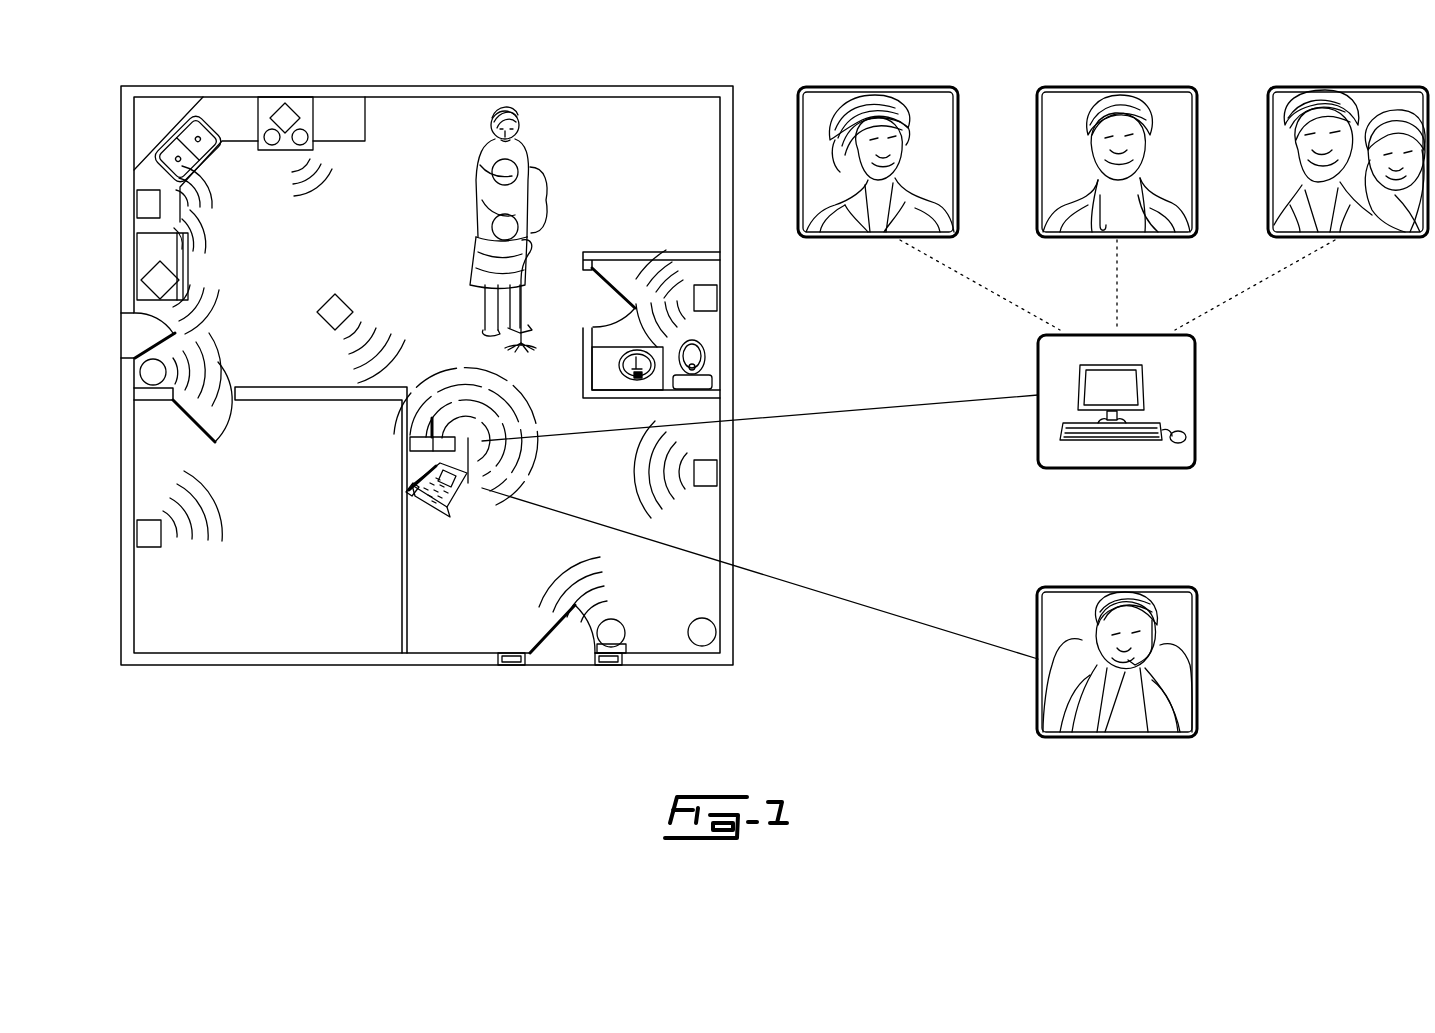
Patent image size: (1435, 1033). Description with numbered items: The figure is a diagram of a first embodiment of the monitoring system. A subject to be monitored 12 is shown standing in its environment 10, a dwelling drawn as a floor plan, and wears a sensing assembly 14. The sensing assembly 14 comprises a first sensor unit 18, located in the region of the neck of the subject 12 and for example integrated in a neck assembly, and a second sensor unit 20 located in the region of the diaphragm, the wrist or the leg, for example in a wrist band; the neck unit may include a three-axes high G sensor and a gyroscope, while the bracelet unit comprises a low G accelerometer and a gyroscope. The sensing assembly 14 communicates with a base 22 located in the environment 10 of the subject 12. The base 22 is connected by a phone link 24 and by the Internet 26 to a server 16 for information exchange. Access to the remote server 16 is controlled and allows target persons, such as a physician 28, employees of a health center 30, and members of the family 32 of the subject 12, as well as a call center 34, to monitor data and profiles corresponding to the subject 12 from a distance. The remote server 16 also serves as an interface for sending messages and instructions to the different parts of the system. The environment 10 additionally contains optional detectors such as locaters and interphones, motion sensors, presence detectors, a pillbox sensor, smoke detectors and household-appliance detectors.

The environment 10 is at (395, 697).
The subject to be monitored 12 is at (512, 115).
The sensing assembly 14 is at (546, 200).
The server 16 is at (1197, 393).
The first sensor unit 18 is at (520, 167).
The second sensor unit 20 is at (490, 232).
The base 22 is at (440, 512).
The phone link 24 is at (832, 597).
The Internet 26 is at (823, 412).
The physician 28 is at (900, 87).
The health center 30 is at (1120, 87).
The family 32 is at (1335, 87).
The call center 34 is at (1197, 661).